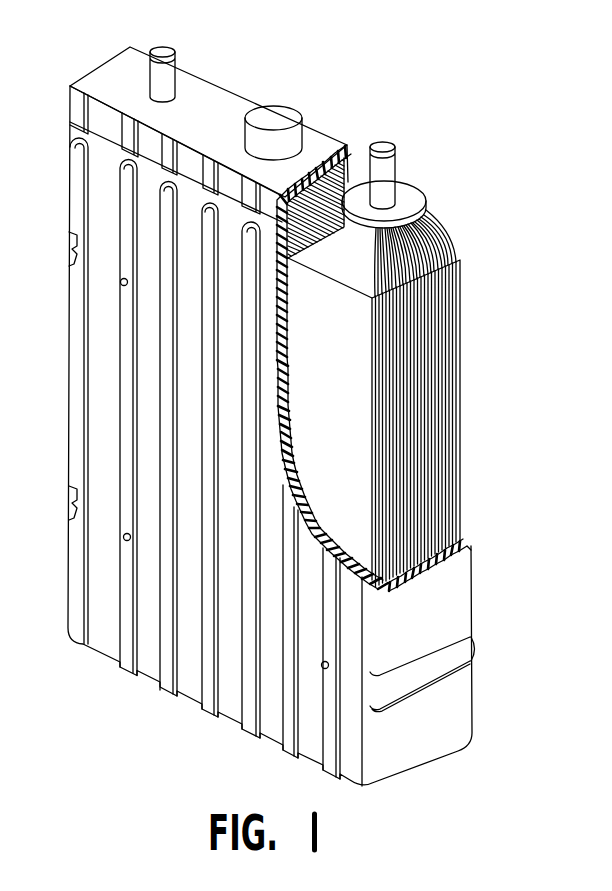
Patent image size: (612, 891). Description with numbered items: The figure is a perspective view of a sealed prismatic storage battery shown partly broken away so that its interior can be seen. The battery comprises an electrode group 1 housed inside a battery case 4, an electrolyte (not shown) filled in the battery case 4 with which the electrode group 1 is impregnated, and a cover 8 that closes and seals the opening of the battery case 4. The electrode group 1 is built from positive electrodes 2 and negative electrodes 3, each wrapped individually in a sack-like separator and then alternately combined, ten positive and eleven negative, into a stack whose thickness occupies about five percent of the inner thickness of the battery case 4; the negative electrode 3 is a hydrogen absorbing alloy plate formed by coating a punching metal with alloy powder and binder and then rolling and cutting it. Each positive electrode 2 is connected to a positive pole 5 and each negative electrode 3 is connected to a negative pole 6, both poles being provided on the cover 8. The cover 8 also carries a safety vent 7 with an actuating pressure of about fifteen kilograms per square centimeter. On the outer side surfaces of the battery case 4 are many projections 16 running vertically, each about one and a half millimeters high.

The electrode group 1 is at (373, 352).
The positive electrode 2 is at (403, 427).
The negative electrode 3 is at (345, 457).
The battery case 4 is at (78, 208).
The positive pole 5 is at (165, 50).
The negative pole 6 is at (382, 148).
The safety vent 7 is at (287, 118).
The cover 8 is at (230, 94).
The projections 16 is at (127, 635).